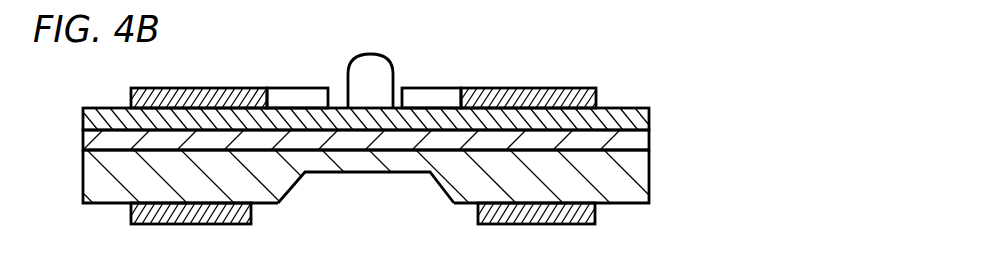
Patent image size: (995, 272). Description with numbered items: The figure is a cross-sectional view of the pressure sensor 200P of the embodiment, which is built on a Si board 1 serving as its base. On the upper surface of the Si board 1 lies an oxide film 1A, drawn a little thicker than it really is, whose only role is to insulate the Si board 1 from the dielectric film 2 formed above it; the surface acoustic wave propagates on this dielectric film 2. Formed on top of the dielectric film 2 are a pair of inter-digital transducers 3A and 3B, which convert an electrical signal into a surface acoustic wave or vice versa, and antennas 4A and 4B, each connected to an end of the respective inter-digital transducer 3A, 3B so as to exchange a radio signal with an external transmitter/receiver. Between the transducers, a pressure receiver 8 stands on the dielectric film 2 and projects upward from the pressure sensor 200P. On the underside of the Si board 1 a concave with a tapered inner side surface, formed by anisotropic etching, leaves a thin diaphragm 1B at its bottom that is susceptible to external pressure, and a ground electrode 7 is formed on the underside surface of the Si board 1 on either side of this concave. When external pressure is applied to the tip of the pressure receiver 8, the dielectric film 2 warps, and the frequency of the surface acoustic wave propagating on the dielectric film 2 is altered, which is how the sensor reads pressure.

The pressure sensor 200P is at (718, 66).
The Si board 1 is at (650, 183).
The oxide film 1A is at (650, 138).
The diaphragm 1B is at (340, 172).
The dielectric film 2 is at (650, 109).
The inter-digital transducer 3A is at (310, 90).
The inter-digital transducer 3B is at (437, 90).
The antenna 4A is at (217, 92).
The antenna 4B is at (568, 90).
The ground electrode 7 is at (597, 217).
The pressure receiver 8 is at (368, 60).